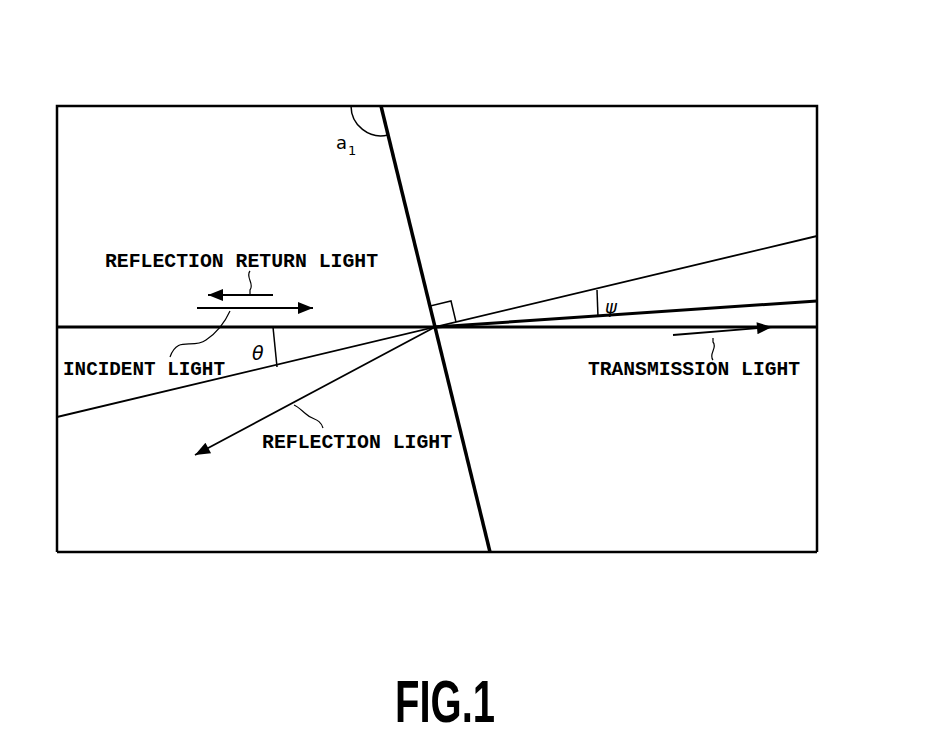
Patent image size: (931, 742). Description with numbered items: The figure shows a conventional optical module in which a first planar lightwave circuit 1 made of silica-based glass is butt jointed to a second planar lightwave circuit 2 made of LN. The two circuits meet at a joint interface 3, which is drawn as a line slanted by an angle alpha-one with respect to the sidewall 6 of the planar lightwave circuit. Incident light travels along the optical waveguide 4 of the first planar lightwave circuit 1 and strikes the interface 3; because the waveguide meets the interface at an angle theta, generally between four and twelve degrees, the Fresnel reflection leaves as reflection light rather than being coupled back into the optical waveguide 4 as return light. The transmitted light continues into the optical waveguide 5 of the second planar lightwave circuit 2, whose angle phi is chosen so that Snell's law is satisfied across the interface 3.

The first planar lightwave circuit 1 is at (238, 554).
The second planar lightwave circuit 2 is at (612, 554).
The interface 3 is at (400, 175).
The optical waveguide 4 is at (110, 326).
The optical waveguide 5 is at (556, 328).
The sidewall 6 is at (157, 106).